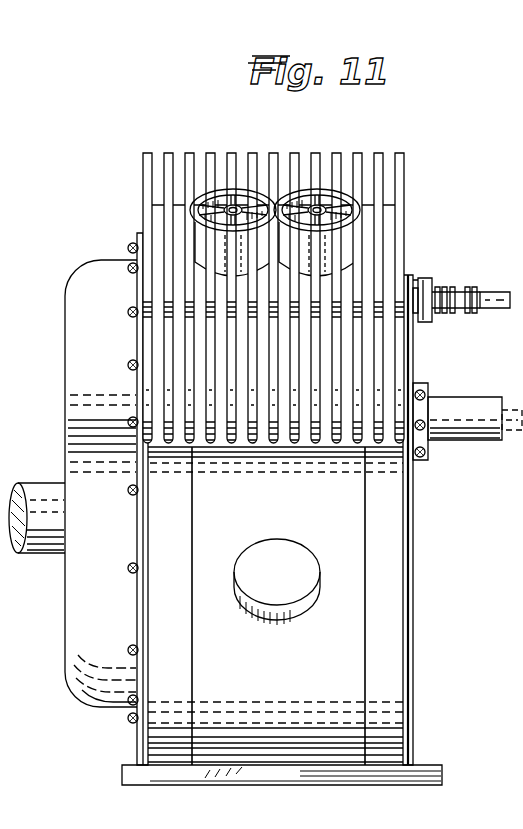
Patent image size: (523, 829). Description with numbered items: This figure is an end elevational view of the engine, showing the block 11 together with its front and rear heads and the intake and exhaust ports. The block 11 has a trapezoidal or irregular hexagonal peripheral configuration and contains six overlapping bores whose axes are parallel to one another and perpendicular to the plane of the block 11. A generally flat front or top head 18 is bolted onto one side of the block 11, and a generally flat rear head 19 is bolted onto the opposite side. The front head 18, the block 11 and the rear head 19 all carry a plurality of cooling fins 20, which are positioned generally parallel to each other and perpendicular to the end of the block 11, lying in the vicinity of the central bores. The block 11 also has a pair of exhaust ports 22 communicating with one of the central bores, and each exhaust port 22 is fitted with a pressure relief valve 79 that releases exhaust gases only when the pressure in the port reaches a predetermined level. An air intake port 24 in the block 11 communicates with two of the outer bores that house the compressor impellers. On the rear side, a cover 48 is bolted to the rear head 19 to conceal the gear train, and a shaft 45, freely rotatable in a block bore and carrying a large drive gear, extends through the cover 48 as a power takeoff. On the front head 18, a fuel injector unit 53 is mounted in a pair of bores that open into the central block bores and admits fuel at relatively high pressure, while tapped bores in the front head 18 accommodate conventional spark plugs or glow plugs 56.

The block 11 is at (367, 700).
The front head 18 is at (400, 590).
The rear head 19 is at (165, 738).
The cooling fins 20 is at (209, 153).
The exhaust ports 22 is at (263, 200).
The air intake port 24 is at (271, 621).
The shaft 45 is at (33, 492).
The cover 48 is at (78, 581).
The fuel injector unit 53 is at (463, 403).
The spark plugs or glow plugs 56 is at (412, 278).
The pressure relief valve 79 is at (235, 206).